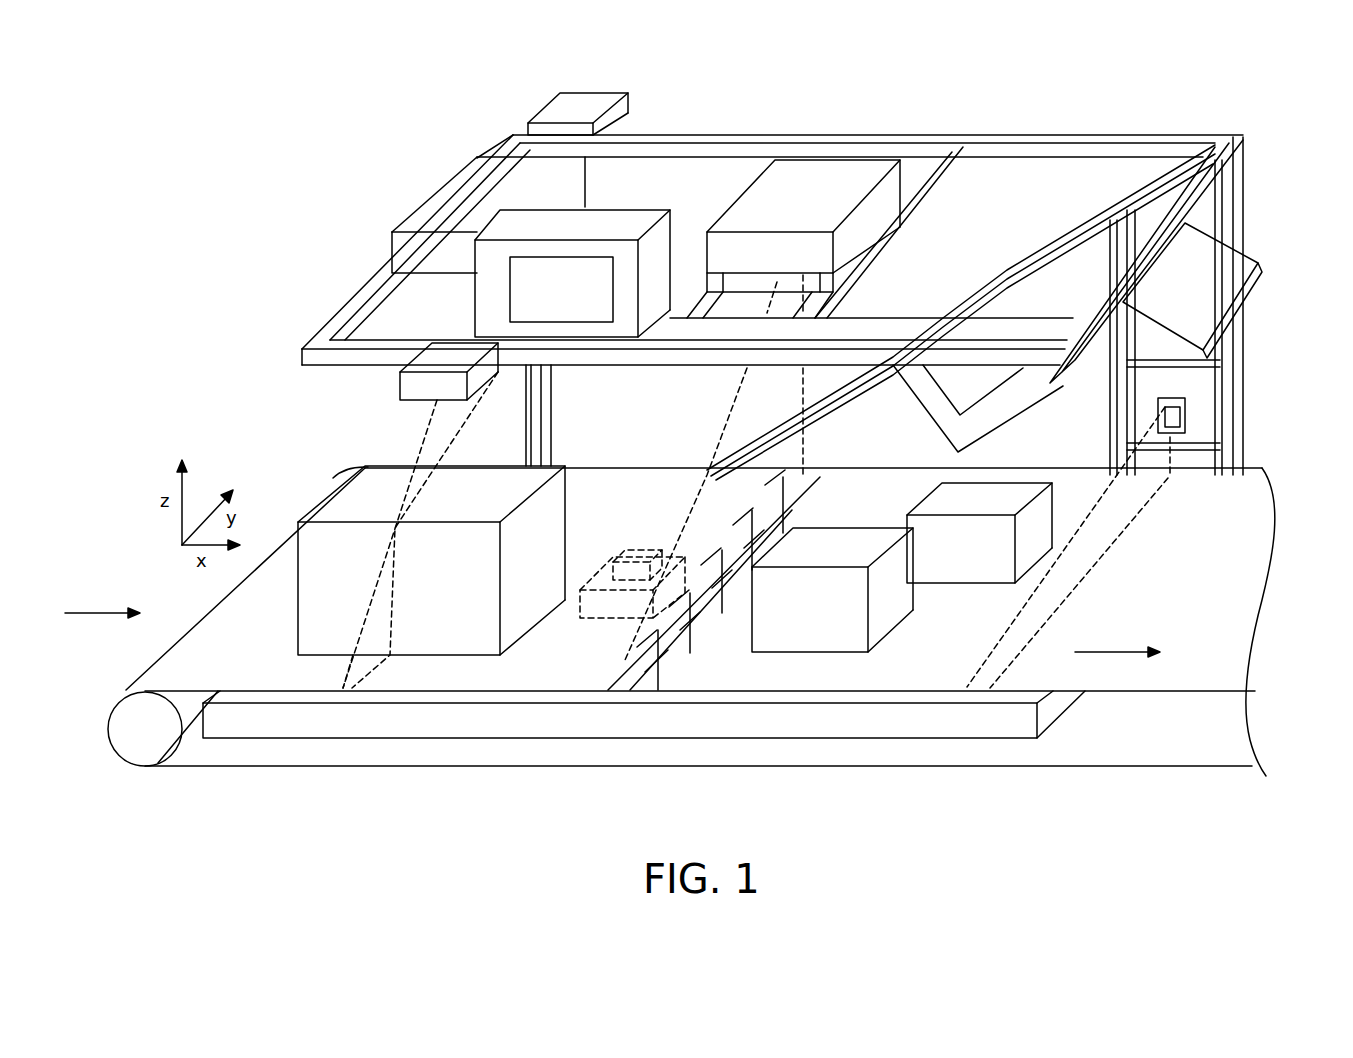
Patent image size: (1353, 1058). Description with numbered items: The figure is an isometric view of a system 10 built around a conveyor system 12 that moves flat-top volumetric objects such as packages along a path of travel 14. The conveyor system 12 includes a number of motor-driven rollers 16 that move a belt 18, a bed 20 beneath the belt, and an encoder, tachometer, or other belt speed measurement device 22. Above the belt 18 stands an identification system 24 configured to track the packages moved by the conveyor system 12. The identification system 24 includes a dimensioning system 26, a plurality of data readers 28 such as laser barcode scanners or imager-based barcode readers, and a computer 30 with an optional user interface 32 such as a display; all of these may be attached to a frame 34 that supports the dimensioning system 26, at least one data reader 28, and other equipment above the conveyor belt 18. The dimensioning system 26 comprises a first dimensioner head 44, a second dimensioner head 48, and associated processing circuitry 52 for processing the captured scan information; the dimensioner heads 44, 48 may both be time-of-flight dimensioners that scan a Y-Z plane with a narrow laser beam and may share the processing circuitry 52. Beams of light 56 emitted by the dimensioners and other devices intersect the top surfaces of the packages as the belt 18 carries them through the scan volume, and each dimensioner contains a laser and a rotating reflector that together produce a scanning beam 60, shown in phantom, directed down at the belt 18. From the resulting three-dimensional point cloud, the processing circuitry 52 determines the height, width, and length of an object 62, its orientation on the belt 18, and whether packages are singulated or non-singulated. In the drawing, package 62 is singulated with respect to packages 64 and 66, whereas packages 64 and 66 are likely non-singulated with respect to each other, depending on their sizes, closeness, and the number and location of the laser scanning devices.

The system 10 is at (174, 386).
The conveyor system 12 is at (1250, 580).
The path of travel 14 is at (112, 615).
The motor-driven rollers 16 is at (143, 755).
The belt 18 is at (822, 677).
The bed 20 is at (360, 730).
The belt speed measurement device 22 is at (650, 557).
The identification system 24 is at (1284, 332).
The dimensioning system 26 is at (401, 164).
The data readers 28 is at (802, 178).
The computer 30 is at (566, 327).
The user interface 32 is at (592, 256).
The frame 34 is at (1150, 136).
The first dimensioner head 44 is at (400, 380).
The second dimensioner head 48 is at (572, 93).
The processing circuitry 52 is at (448, 186).
The beams of light 56 is at (420, 429).
The scanning beam 60 is at (398, 661).
The object 62 is at (550, 542).
The package 64 is at (832, 540).
The package 66 is at (998, 481).